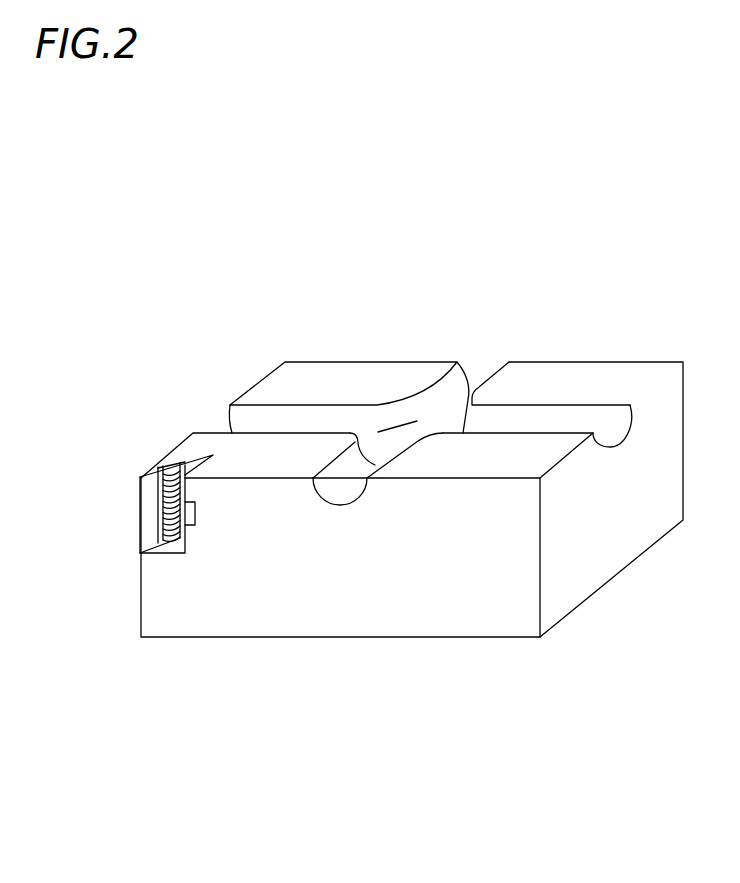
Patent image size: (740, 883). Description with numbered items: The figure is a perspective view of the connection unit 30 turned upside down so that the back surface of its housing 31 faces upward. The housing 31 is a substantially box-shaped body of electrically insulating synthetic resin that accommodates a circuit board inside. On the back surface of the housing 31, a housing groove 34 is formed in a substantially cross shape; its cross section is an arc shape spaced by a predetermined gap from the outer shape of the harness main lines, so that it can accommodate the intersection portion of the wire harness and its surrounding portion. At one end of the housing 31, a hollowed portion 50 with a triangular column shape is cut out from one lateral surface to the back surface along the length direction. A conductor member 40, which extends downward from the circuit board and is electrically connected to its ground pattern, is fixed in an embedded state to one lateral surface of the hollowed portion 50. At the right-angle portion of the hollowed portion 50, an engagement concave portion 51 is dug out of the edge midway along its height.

The connection unit 30 is at (322, 329).
The housing 31 is at (377, 373).
The housing groove 34 is at (408, 433).
The conductor member 40 is at (178, 470).
The hollowed portion 50 is at (170, 547).
The engagement concave portion 51 is at (185, 523).